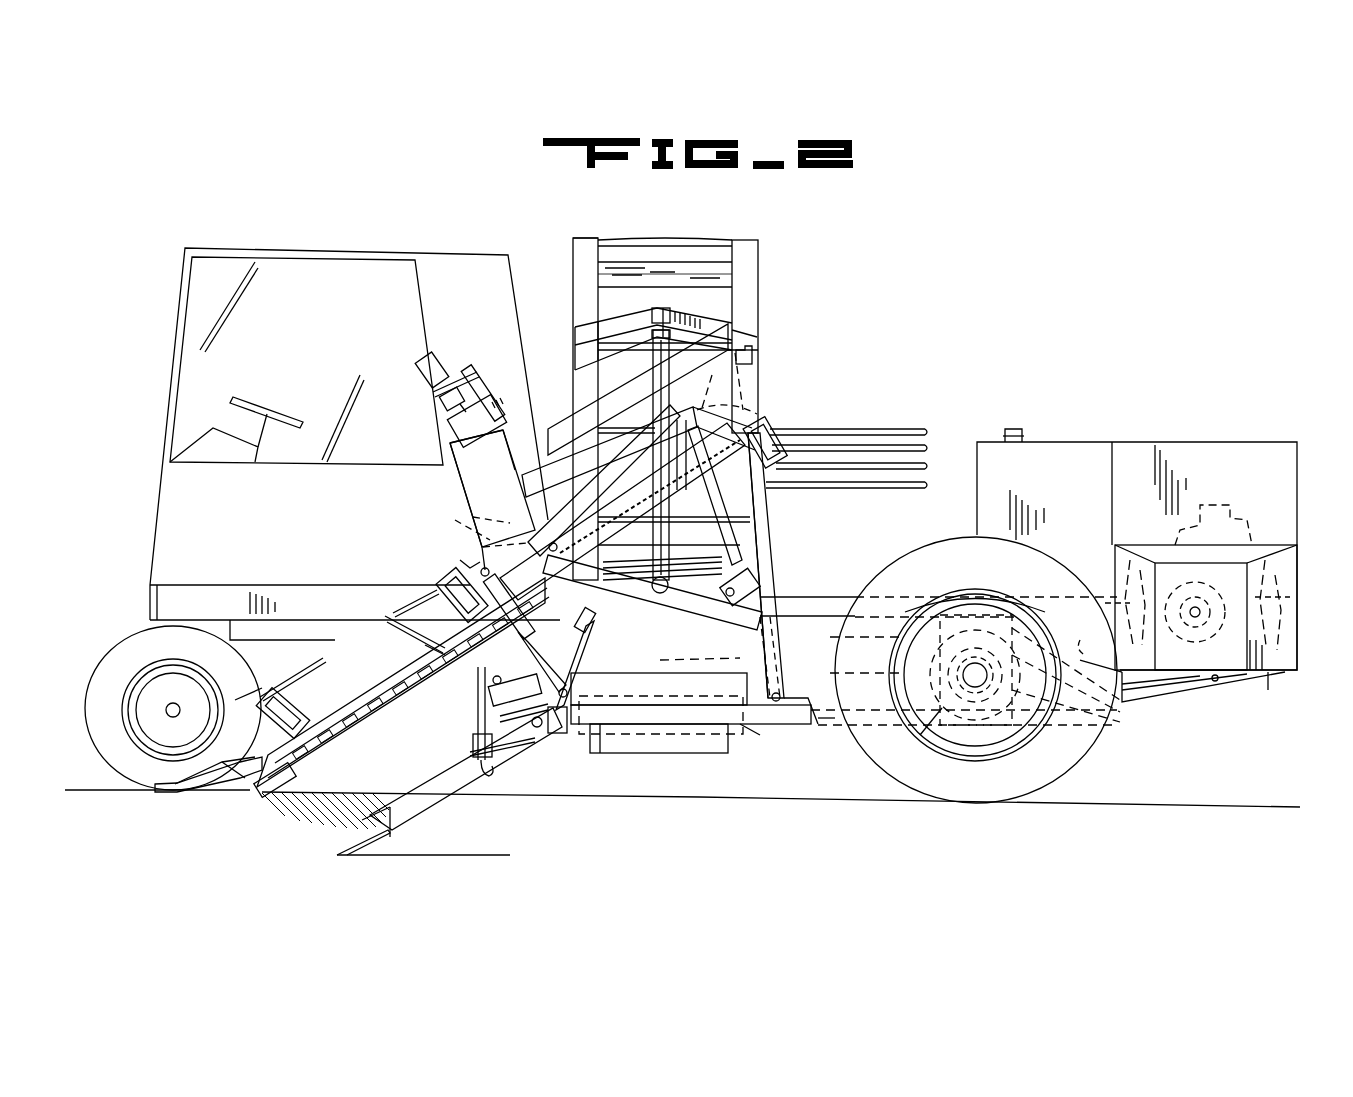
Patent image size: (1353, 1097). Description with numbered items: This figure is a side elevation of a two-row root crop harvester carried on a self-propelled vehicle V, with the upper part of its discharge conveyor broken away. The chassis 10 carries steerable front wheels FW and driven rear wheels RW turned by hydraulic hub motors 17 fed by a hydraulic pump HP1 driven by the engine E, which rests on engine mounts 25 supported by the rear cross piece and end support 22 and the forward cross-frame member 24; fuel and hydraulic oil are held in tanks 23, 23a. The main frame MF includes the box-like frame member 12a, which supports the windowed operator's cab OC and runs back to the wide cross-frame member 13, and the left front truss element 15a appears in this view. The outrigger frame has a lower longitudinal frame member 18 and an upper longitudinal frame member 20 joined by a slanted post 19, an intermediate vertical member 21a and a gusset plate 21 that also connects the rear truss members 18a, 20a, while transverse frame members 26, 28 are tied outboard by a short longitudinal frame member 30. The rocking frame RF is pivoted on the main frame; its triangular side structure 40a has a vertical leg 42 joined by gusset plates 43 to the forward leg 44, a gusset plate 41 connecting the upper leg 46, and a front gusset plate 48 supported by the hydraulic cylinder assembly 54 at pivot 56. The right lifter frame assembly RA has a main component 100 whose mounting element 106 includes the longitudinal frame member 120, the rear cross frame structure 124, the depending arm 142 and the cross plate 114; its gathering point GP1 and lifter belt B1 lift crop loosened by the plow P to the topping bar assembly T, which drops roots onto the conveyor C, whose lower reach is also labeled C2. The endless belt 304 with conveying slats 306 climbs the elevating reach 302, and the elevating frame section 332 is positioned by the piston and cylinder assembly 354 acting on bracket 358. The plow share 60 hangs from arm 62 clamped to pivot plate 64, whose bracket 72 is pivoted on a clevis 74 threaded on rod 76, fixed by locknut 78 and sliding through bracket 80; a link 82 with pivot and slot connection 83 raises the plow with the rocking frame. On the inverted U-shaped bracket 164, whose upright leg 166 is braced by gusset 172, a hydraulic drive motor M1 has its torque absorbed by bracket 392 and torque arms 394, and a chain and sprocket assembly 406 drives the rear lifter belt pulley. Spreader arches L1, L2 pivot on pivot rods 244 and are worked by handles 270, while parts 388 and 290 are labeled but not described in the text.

The self-propelled vehicle V is at (155, 523).
The operator's cab OC is at (172, 375).
The main frame member 12a is at (158, 600).
The front wheels FW is at (146, 650).
The rear wheels RW is at (950, 790).
The intermediate cross-frame member 13 is at (990, 600).
The hydraulic hub motors 17 is at (950, 662).
The gusset plate 21 is at (925, 725).
The tank 23a is at (826, 668).
The upper longitudinal outrigger frame member 20 is at (830, 632).
The forward cross-frame member 24 is at (1065, 660).
The tank 23 is at (1040, 487).
The engine E is at (1240, 518).
The engine mounts 25 is at (1118, 603).
The truss 20a is at (1080, 640).
The chassis 10 is at (1127, 704).
The lower truss 18a is at (1160, 688).
The hydraulic pump HP1 is at (1215, 680).
The rear main cross piece and end support 22 is at (1268, 690).
The transverse conveyor C is at (655, 245).
The endless belt 304 is at (616, 243).
The elevating reach 302 is at (722, 252).
The conveying slats 306 is at (730, 275).
The elevating frame section 332 is at (760, 301).
The hydraulic piston and cylinder assembly 354 is at (676, 356).
The bracket 358 is at (720, 329).
The rear cross frame structure 124 is at (760, 348).
The gusset plate 41 is at (758, 367).
The triangular side structure 40a is at (760, 385).
The longitudinal frame member 120 is at (755, 410).
The chain and sprocket assembly 406 is at (770, 427).
The conveyor tubes 290 is at (886, 442).
The upper leg 46 is at (643, 414).
The main component 100 is at (595, 478).
The mounting element 106 is at (612, 468).
The lifter belt B1 is at (310, 757).
The crop gathering point GP1 is at (190, 792).
The forwardly and upwardly projecting leg 44 is at (668, 612).
The rocking frame RF is at (775, 512).
The vertical leg 42 is at (760, 497).
The gusset plates 43 is at (772, 655).
The depending arm 142 is at (770, 556).
The topping bar assembly T is at (748, 568).
The main frame MF is at (760, 742).
The lower longitudinal outrigger frame member 18 is at (805, 726).
The transverse horizontal frame member 28 is at (752, 734).
The slanted post 19 is at (592, 678).
The short outboard longitudinal frame member 30 is at (672, 735).
The intermediate vertical member 21a is at (740, 658).
The rod 76 is at (587, 650).
The bracket 80 is at (592, 633).
The transverse horizontal frame member 26 is at (575, 734).
The cylinder C2 is at (607, 745).
The clevis 74 is at (493, 700).
The locknut 78 is at (503, 715).
The upstanding bracket 72 is at (503, 728).
The hydraulic cylinder assembly 54 is at (498, 583).
The pivot 56 is at (468, 566).
The front gusset plate 48 is at (455, 537).
The cross plate 114 is at (450, 522).
The upright leg 166 is at (488, 476).
The gussets 172 is at (458, 478).
The inverted U-shaped bracket 164 is at (458, 452).
The motor housing 388 is at (452, 434).
The bracket 392 is at (485, 390).
The torque arms 394 is at (458, 375).
The motor M1 is at (420, 365).
The right lifter frame assembly RA is at (360, 665).
The pivot rod 244 is at (432, 574).
The opening and closing handle 270 is at (425, 612).
The spreader arch L2 is at (398, 632).
The front truss element 15a is at (422, 645).
The spreader arch L1 is at (250, 690).
The forwardly projecting arm 62 is at (412, 765).
The plow P is at (398, 833).
The plow share 60 is at (345, 852).
The pivot and slot connection 83 is at (470, 753).
The pivot plate 64 is at (505, 742).
The link 82 is at (490, 768).